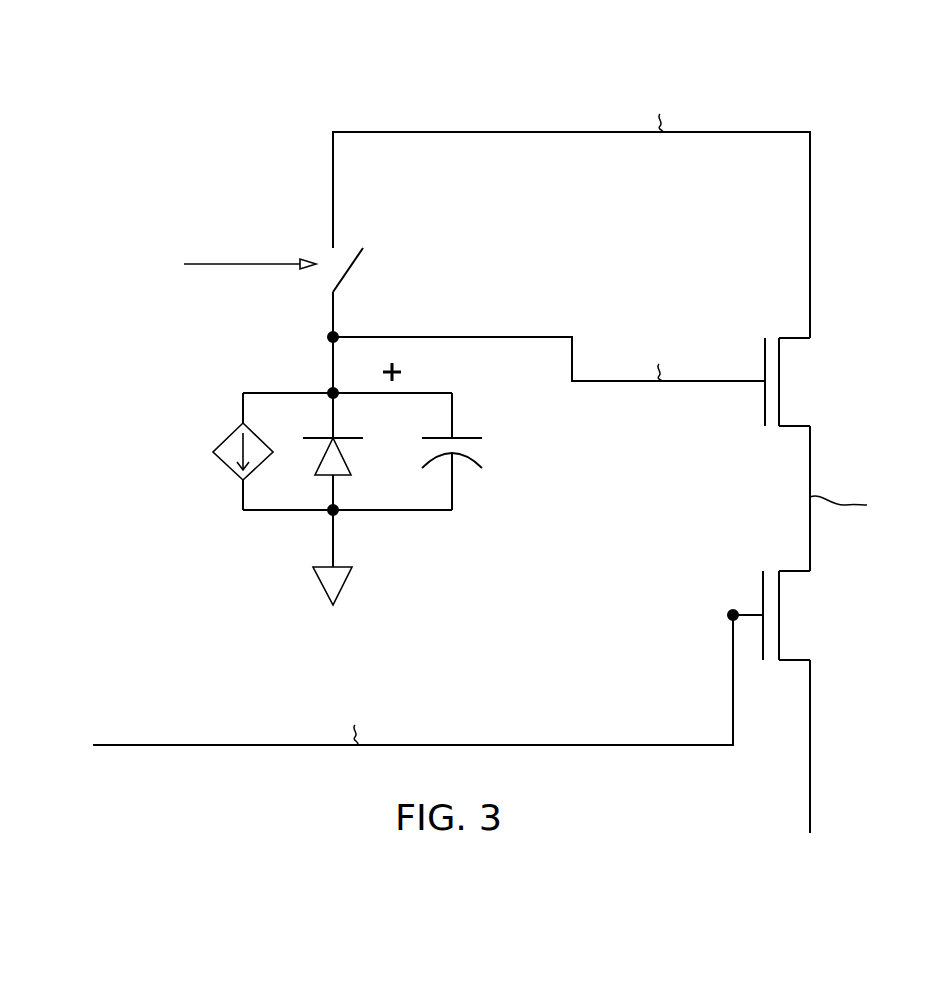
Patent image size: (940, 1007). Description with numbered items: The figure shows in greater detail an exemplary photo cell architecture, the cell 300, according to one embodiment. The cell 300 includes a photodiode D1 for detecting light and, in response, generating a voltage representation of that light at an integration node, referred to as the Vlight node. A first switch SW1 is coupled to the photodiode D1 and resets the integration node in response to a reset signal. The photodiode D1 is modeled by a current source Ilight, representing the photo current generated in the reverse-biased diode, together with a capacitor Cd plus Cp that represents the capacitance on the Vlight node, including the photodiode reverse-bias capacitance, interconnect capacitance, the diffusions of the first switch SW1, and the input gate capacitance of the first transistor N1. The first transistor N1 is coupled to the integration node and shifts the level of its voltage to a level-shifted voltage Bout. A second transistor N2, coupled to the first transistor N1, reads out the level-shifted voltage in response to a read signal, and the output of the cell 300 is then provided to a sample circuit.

The cell 300 is at (119, 72).
The first switch SW1 is at (370, 254).
The photodiode D1 is at (341, 451).
The first transistor N1 is at (811, 382).
The second transistor N2 is at (810, 615).